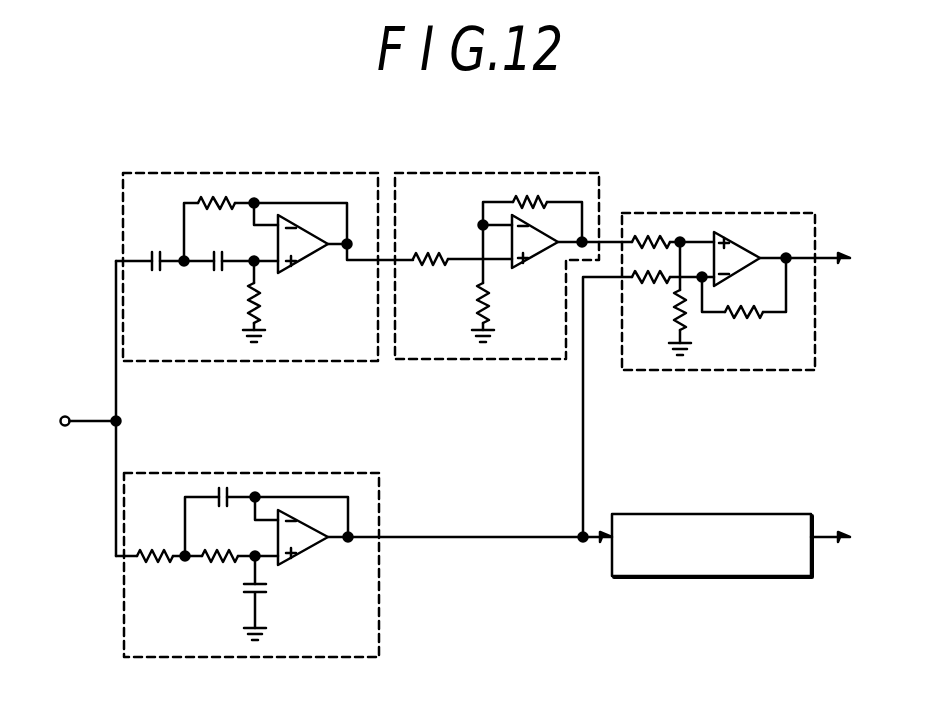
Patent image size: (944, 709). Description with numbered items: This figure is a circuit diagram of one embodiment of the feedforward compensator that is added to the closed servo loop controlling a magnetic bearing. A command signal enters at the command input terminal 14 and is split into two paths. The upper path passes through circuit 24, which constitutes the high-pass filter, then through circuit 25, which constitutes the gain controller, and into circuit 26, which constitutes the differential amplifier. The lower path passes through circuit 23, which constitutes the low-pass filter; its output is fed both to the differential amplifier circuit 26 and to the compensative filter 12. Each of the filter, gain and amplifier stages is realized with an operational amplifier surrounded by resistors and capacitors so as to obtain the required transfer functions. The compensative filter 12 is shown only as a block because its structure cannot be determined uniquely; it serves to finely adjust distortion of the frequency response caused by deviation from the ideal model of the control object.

The compensative filter 12 is at (697, 513).
The command input terminal 14 is at (65, 416).
The circuit constituting the low-pass filter 23 is at (326, 472).
The circuit constituting the high-pass filter 24 is at (330, 172).
The circuit constituting the gain controller 25 is at (538, 171).
The circuit constituting the differential amplifier 26 is at (752, 212).